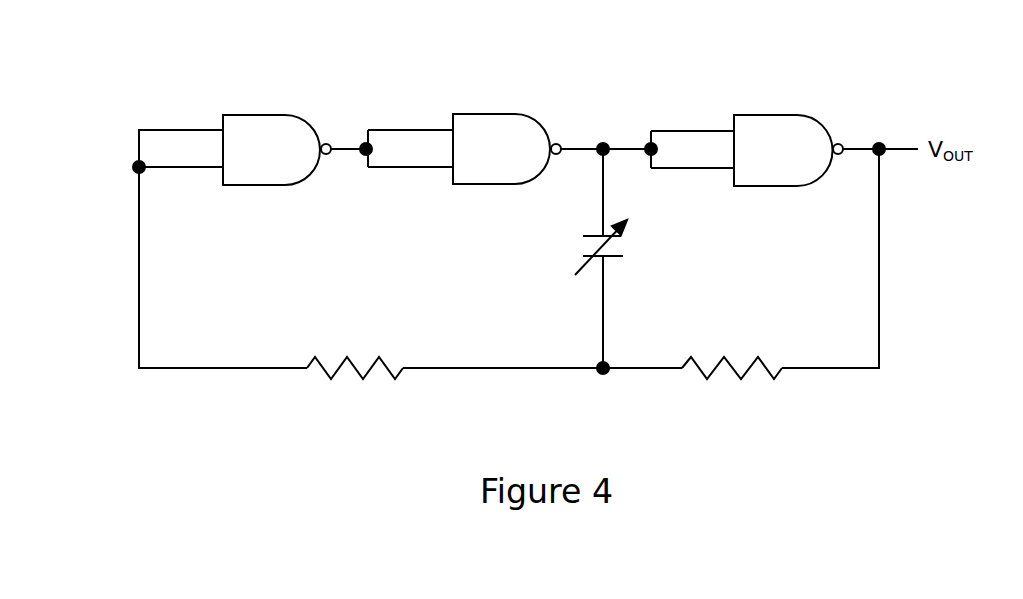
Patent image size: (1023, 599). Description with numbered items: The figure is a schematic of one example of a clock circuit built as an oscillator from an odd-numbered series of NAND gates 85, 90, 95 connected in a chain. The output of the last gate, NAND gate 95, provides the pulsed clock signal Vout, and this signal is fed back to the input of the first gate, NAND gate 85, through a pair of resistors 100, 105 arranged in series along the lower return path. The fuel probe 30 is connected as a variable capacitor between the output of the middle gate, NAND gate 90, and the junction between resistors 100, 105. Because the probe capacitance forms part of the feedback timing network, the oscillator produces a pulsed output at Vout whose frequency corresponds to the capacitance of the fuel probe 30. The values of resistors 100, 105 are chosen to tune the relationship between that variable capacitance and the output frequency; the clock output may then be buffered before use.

The NAND gate 85 is at (279, 138).
The NAND gate 90 is at (513, 133).
The NAND gate 95 is at (795, 133).
The fuel probe 30 is at (635, 247).
The resistor 105 is at (387, 362).
The resistor 100 is at (768, 360).